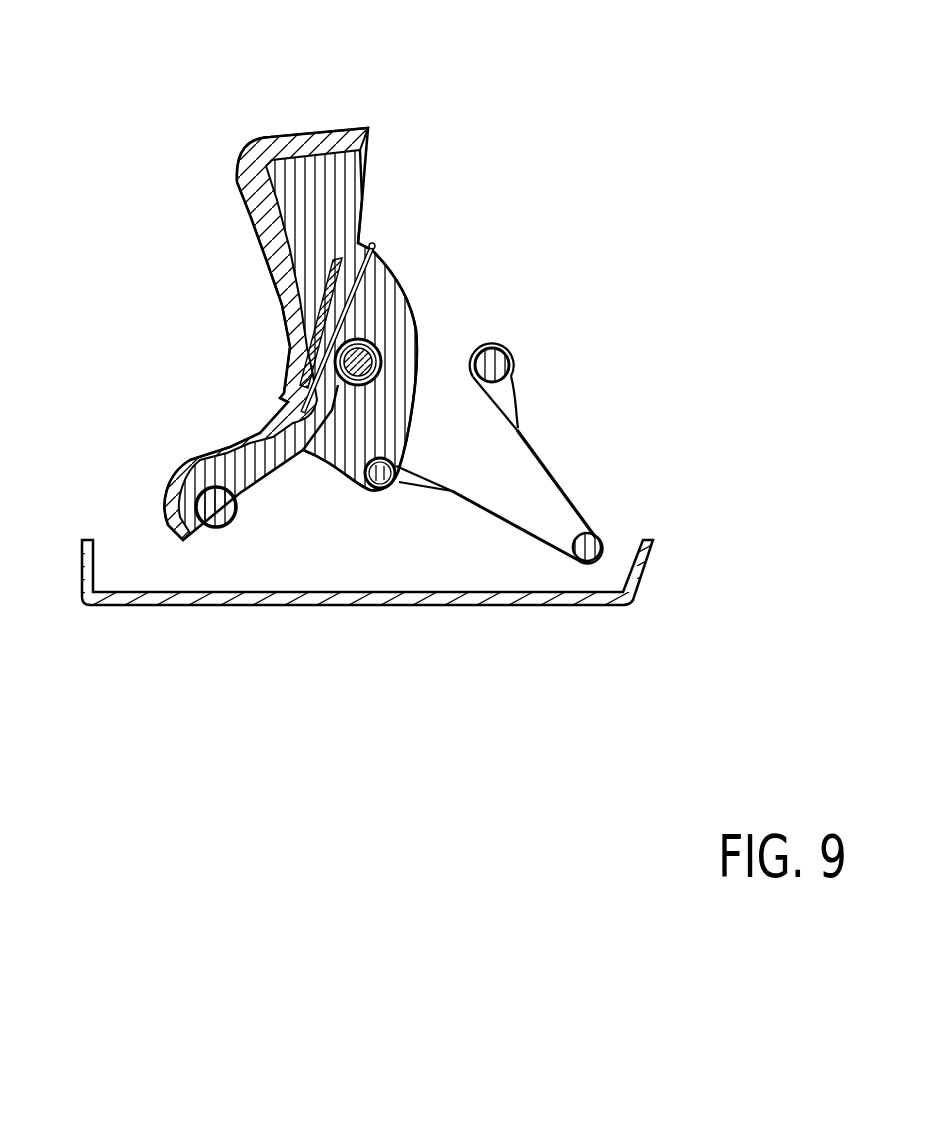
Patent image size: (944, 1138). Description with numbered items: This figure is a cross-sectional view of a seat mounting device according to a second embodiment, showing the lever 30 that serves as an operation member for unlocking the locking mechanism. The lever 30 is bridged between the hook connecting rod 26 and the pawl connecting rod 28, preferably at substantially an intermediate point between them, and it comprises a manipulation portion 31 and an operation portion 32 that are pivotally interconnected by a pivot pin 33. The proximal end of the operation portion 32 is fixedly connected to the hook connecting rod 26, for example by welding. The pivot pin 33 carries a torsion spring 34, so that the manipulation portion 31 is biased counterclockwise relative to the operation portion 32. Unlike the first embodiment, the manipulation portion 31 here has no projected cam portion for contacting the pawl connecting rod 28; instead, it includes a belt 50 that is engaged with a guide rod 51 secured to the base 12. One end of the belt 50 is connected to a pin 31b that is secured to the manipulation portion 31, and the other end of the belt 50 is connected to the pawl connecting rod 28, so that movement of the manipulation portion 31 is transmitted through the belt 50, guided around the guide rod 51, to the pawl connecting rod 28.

The base 12 is at (347, 607).
The hook connecting rod 26 is at (212, 527).
The pawl connecting rod 28 is at (505, 345).
The lever 30 is at (176, 166).
The manipulation portion 31 is at (301, 150).
The pin 31b is at (370, 490).
The operation portion 32 is at (227, 447).
The pivot pin 33 is at (383, 338).
The torsion spring 34 is at (336, 272).
The belt 50 is at (543, 463).
The guide rod 51 is at (587, 562).